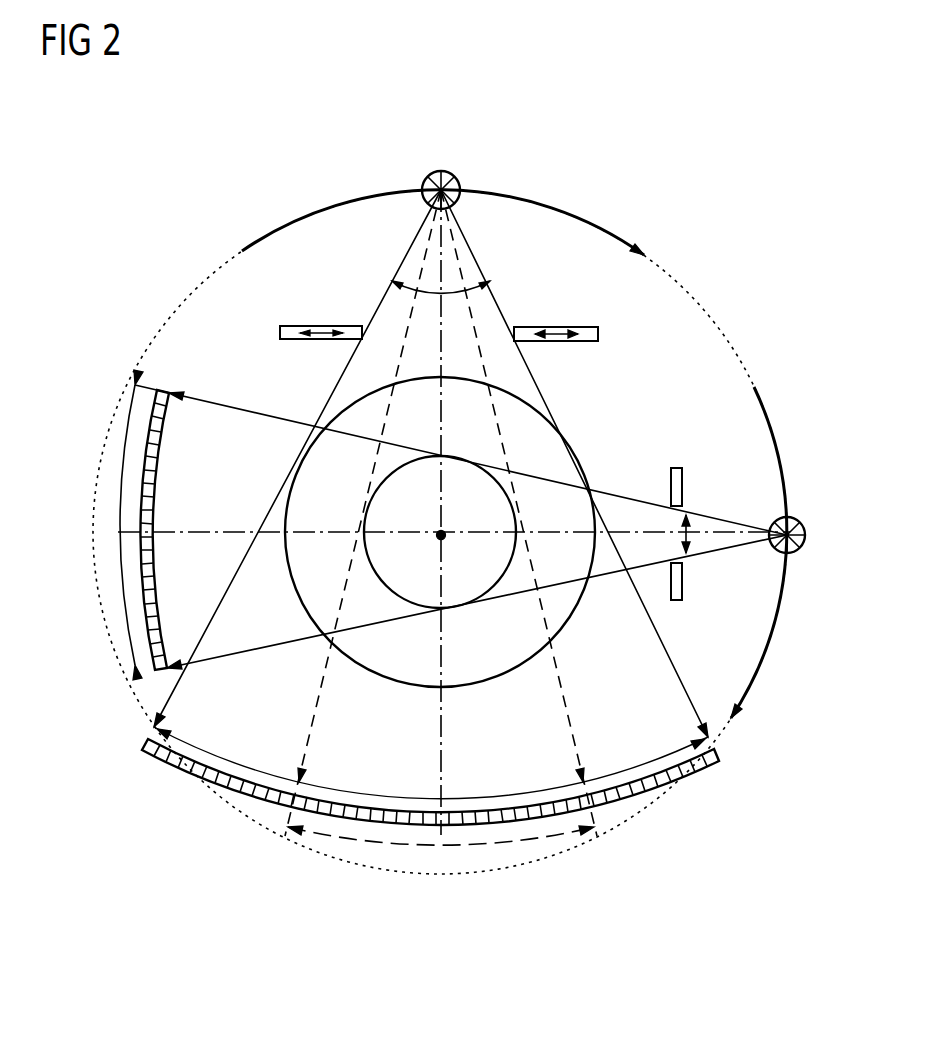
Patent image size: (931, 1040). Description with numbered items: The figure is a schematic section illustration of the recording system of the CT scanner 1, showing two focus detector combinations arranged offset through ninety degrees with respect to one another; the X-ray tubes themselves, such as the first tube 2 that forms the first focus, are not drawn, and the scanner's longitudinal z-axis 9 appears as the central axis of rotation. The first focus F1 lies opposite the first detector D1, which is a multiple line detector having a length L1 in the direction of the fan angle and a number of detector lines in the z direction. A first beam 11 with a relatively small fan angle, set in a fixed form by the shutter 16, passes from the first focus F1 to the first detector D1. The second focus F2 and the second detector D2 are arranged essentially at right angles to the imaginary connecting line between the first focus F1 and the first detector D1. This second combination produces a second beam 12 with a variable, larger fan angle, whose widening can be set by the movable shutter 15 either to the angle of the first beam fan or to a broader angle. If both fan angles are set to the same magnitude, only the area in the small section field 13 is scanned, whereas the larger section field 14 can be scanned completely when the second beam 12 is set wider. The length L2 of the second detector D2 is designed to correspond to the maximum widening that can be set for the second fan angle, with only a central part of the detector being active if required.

The CT scanner 1 is at (692, 528).
The first tube 2 is at (447, 293).
The z-axis 9 is at (444, 538).
The first beam 11 is at (627, 507).
The second beam 12 is at (427, 273).
The first/small section field 13 is at (498, 583).
The second/large section field 14 is at (566, 618).
The movable shutter 15 is at (280, 327).
The shutter 16 is at (675, 467).
The first focus F1 is at (806, 543).
The second focus F2 is at (445, 168).
The first detector D1 is at (166, 388).
The second detector D2 is at (720, 755).
The length of first detector L1 is at (118, 540).
The length of second detector L2 is at (480, 797).